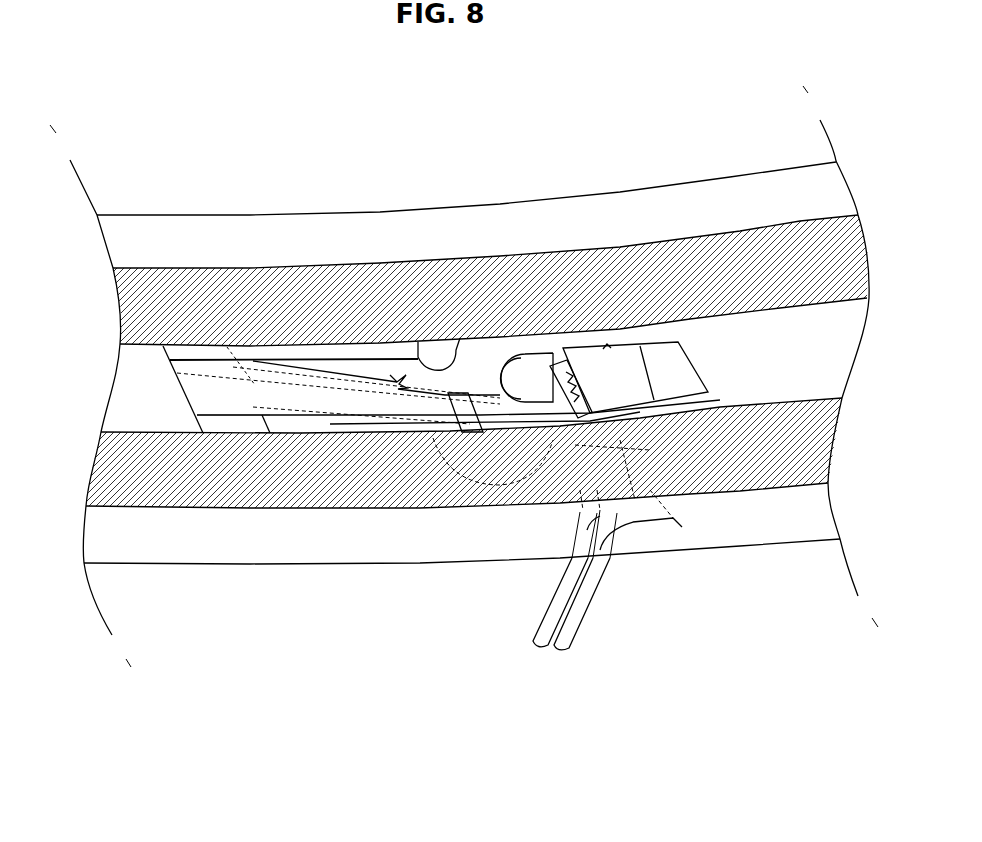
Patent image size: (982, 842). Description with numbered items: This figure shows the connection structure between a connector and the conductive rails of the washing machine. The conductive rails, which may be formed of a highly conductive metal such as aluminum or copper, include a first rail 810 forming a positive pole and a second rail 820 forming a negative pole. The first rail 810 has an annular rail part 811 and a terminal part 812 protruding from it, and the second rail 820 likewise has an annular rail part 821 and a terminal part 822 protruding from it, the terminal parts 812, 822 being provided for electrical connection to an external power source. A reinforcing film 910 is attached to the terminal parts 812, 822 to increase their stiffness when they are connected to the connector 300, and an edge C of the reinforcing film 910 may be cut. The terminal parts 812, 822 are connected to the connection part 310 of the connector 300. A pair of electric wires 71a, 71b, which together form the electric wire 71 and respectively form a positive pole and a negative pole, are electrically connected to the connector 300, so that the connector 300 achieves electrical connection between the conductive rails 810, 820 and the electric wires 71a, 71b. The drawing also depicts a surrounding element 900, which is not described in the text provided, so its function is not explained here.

The display cover 900 is at (696, 197).
The second rail 820 is at (358, 126).
The rail part 821 is at (262, 290).
The terminal part 822 is at (323, 362).
The first rail 810 is at (206, 687).
The rail part 811 is at (232, 488).
The terminal part 812 is at (335, 433).
The reinforcing film 910 is at (390, 376).
The edge C is at (455, 350).
The connection part 310 is at (550, 355).
The connector 300 is at (677, 522).
The electric wire 71 is at (558, 644).
The electric wire 71a is at (533, 634).
The electric wire 71b is at (585, 611).